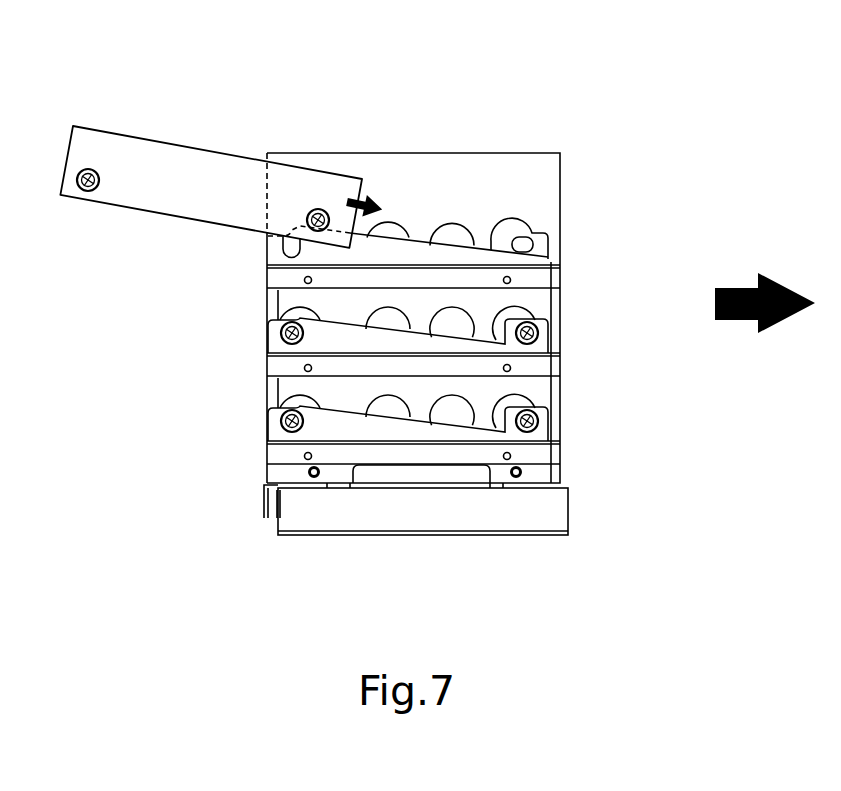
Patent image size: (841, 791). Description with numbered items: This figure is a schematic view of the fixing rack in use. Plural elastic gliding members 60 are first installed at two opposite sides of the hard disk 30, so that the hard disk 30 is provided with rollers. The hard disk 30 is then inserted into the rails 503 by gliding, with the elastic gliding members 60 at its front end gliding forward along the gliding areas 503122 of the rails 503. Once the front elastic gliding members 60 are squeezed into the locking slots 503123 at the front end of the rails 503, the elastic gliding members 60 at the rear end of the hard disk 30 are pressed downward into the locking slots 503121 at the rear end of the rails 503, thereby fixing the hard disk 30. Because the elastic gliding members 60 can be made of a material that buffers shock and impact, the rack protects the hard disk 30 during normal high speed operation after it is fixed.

The hard disk 30 is at (166, 150).
The elastic gliding members 60 is at (313, 218).
The rails 503 is at (430, 257).
The locking slots 503121 is at (287, 257).
The gliding areas 503122 is at (420, 243).
The locking slots 503123 is at (533, 250).